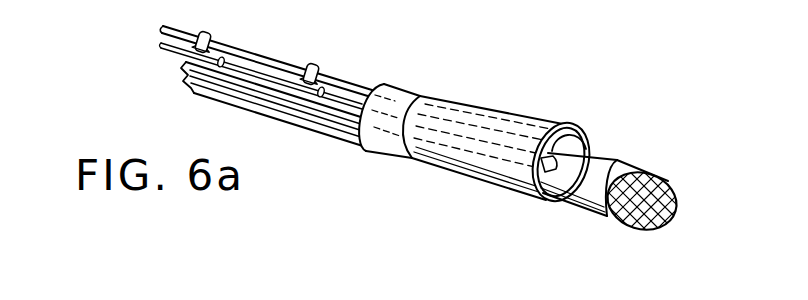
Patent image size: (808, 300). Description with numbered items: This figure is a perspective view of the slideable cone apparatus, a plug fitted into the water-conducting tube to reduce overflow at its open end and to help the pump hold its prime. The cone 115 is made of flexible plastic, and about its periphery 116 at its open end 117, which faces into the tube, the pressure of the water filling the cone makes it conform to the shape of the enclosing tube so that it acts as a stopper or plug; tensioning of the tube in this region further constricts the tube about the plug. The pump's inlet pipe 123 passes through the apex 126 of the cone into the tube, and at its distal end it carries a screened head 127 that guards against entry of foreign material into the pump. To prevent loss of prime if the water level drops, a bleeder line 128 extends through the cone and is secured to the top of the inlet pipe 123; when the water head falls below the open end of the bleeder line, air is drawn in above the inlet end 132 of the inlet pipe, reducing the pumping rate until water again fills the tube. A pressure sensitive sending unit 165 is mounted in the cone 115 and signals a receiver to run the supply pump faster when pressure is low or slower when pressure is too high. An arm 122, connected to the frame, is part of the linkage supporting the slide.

The cone 115 is at (514, 121).
The periphery 116 is at (535, 198).
The open end 117 is at (581, 142).
The arm 122 is at (567, 202).
The inlet pipe 123 is at (232, 86).
The apex 126 is at (386, 123).
The screened head 127 is at (679, 208).
The bleeder line 128 is at (267, 60).
The inlet end 132 is at (630, 161).
The pressure sensitive sending unit 165 is at (547, 200).